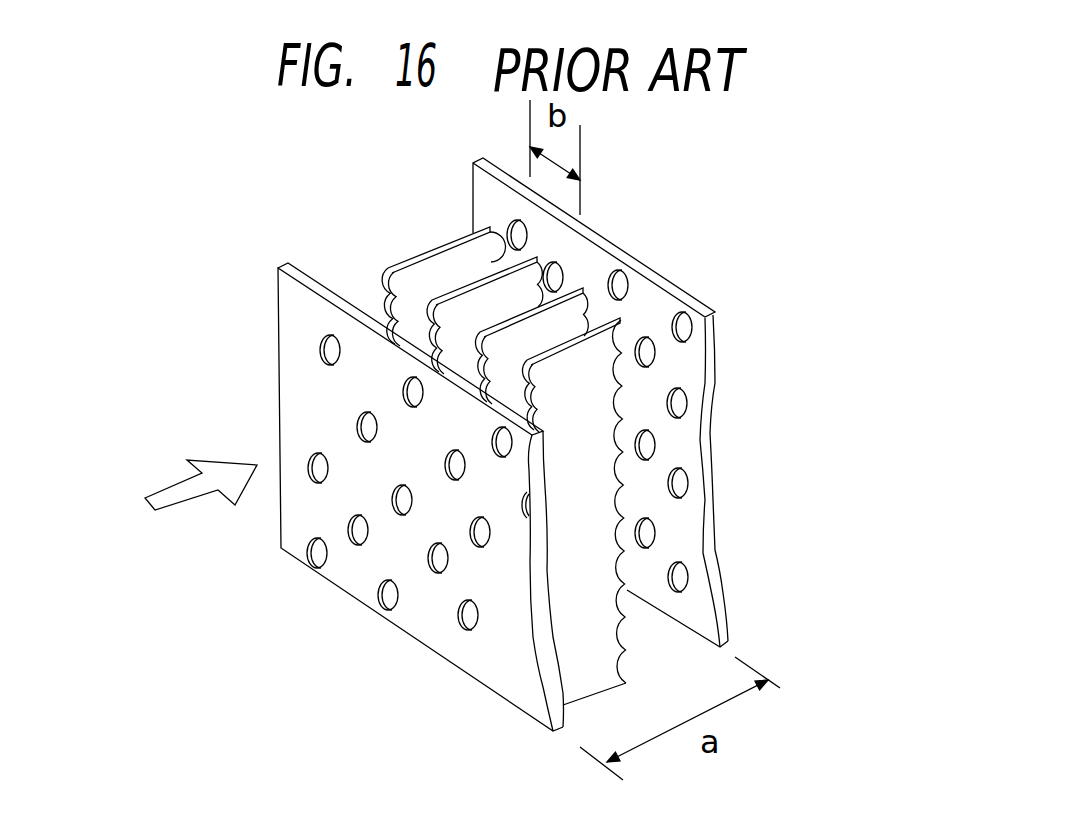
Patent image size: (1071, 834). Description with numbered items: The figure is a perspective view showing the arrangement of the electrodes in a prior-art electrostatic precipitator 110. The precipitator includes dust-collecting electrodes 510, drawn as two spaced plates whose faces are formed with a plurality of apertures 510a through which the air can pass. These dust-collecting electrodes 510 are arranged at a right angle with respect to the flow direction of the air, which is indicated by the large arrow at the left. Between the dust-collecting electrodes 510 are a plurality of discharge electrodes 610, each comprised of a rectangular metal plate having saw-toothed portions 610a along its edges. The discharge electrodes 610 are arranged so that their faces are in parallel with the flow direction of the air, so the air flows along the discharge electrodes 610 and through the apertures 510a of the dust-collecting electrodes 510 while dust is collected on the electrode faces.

The electrostatic precipitator 110 is at (655, 218).
The dust-collecting electrodes 510 is at (352, 452).
The apertures 510a is at (323, 352).
The discharge electrodes 610 is at (552, 429).
The saw-toothed portions 610a is at (640, 630).